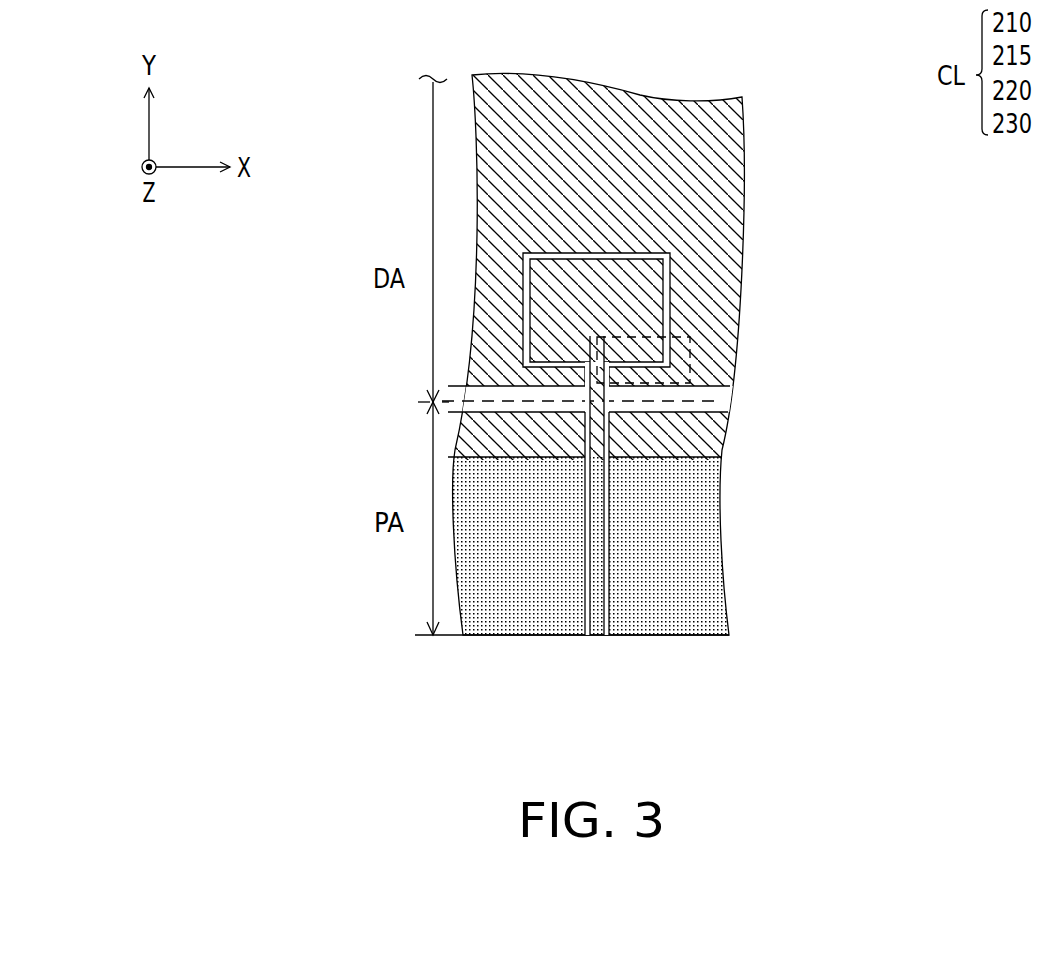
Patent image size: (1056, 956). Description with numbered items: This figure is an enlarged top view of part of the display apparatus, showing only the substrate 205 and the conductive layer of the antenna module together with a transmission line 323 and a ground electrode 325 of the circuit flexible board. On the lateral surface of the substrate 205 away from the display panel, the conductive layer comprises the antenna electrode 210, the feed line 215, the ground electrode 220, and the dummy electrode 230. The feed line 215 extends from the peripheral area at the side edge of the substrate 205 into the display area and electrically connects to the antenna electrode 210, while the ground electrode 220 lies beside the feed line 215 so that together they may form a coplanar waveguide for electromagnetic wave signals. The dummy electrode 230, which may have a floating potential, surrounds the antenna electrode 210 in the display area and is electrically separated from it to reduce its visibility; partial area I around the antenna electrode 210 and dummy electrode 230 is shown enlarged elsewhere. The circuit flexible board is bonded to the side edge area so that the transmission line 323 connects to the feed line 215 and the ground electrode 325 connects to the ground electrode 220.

The substrate 205 is at (707, 395).
The antenna electrode 210 is at (648, 277).
The feed line 215 is at (592, 423).
The ground electrode 220 is at (698, 440).
The dummy electrode 230 is at (693, 165).
The transmission line 323 is at (597, 628).
The ground electrode 325 is at (693, 547).
The partial area I is at (693, 337).